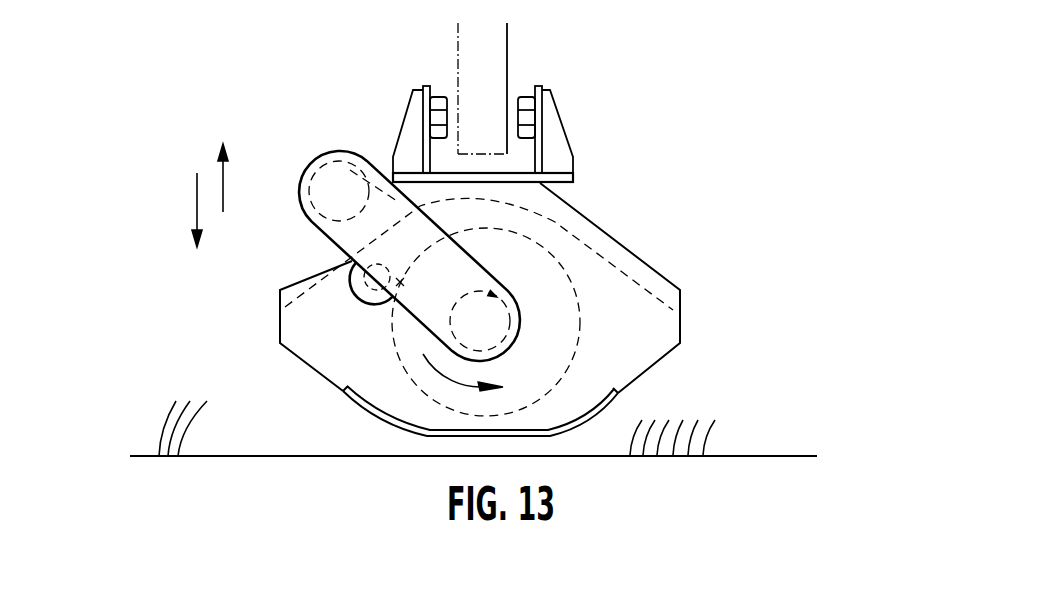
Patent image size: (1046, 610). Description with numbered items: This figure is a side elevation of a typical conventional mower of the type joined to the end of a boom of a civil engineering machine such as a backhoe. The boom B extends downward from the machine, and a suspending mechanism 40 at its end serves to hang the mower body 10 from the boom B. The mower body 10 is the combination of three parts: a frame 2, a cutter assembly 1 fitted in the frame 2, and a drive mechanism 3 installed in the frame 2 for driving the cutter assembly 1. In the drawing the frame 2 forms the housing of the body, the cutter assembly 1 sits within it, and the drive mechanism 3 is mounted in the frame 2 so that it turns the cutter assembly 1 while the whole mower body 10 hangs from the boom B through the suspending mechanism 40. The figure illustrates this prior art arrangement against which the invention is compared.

The boom B is at (508, 59).
The suspending mechanism 40 is at (580, 131).
The mower body 10 is at (502, 297).
The frame 2 is at (648, 265).
The cutter assembly 1 is at (580, 337).
The drive mechanism 3 is at (298, 207).